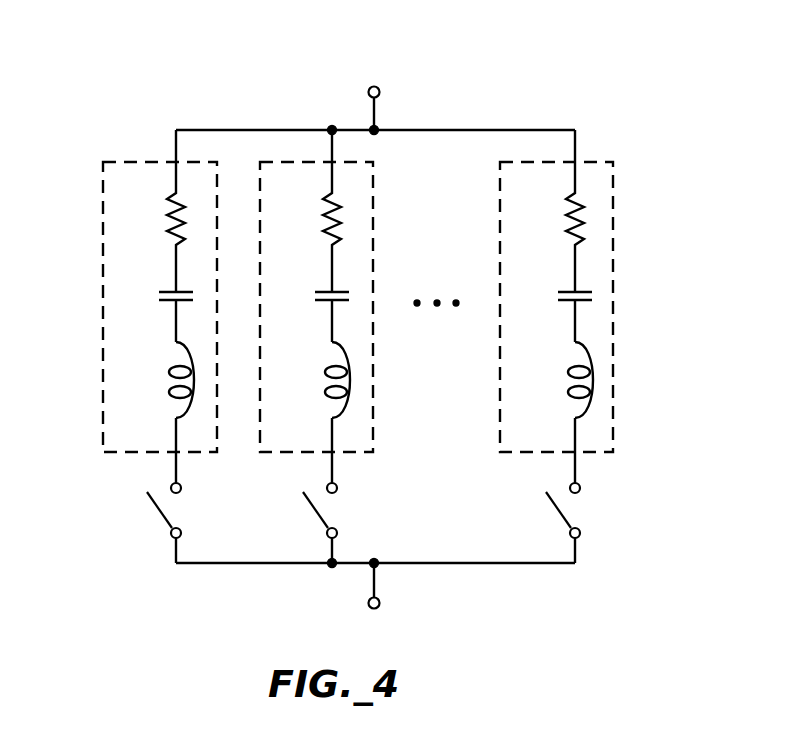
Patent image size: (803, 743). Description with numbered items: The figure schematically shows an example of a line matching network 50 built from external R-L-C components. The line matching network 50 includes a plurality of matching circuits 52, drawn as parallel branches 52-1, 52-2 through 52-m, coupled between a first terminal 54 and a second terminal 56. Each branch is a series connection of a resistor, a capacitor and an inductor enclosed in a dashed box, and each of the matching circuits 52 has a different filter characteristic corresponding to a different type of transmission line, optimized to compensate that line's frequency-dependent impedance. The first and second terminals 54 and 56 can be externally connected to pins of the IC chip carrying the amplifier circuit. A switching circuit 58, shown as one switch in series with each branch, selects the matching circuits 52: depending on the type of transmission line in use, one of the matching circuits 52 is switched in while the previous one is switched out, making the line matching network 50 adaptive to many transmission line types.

The line matching network 50 is at (361, 336).
The matching circuits 52 is at (361, 306).
The first matching circuit 52-1 is at (103, 390).
The second matching circuit 52-2 is at (373, 400).
The m-th matching circuit 52-m is at (613, 400).
The first terminal 54 is at (368, 91).
The second terminal 56 is at (367, 605).
The switching circuit 58 is at (146, 509).